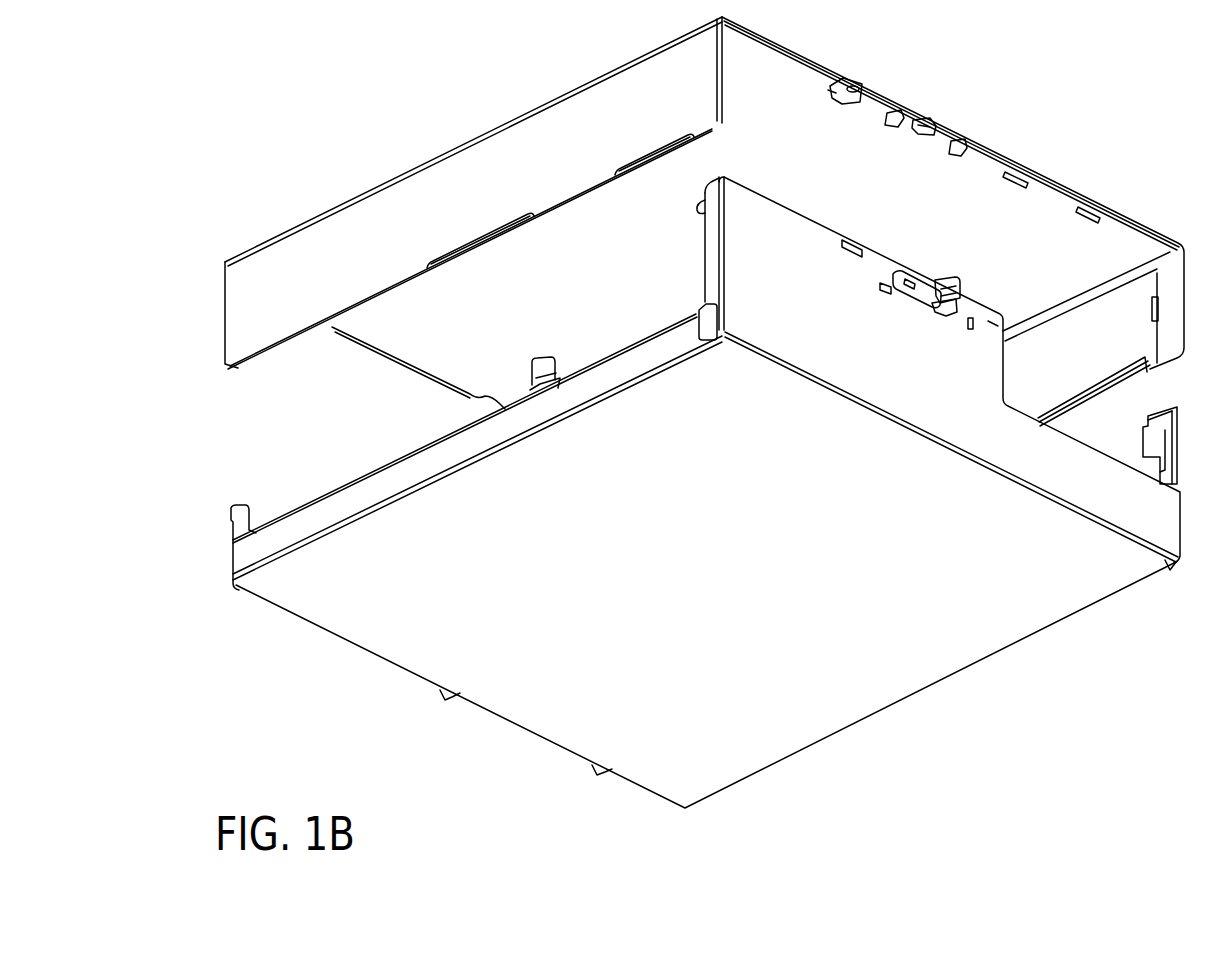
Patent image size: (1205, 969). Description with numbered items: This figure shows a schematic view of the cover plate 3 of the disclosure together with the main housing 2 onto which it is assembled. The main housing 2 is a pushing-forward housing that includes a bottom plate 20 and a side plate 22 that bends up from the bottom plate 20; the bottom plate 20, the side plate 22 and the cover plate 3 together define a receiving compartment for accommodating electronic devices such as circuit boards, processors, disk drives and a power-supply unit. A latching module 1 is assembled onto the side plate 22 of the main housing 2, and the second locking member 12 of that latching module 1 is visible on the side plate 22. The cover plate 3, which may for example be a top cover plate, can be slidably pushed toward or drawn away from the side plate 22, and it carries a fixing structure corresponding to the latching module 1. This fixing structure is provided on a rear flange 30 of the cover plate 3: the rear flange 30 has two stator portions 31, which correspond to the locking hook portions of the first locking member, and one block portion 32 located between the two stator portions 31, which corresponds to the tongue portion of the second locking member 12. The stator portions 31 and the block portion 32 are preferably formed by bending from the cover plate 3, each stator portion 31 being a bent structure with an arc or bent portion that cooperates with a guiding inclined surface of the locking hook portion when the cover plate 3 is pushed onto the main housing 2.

The latching module 1 is at (1030, 238).
The second locking member 12 is at (962, 291).
The main housing 2 is at (705, 492).
The bottom plate 20 is at (921, 602).
The side plate 22 is at (920, 378).
The cover plate 3 is at (704, 221).
The rear flange 30 is at (787, 48).
The stator portion 31 is at (887, 111).
The block portion 32 is at (933, 119).